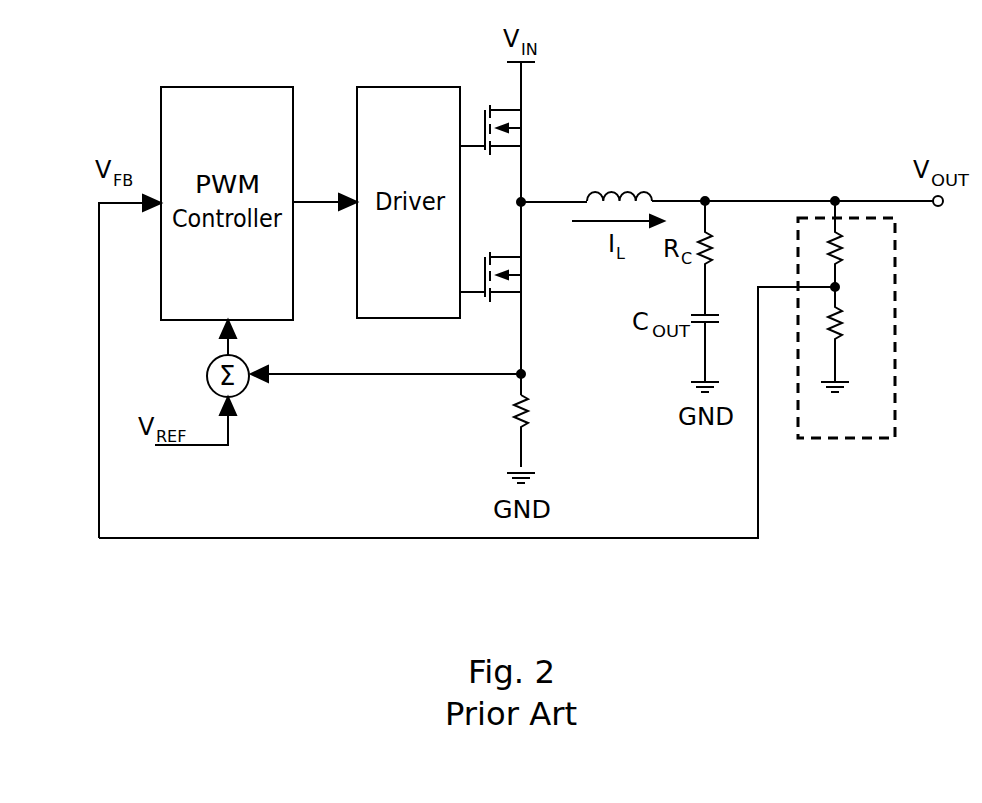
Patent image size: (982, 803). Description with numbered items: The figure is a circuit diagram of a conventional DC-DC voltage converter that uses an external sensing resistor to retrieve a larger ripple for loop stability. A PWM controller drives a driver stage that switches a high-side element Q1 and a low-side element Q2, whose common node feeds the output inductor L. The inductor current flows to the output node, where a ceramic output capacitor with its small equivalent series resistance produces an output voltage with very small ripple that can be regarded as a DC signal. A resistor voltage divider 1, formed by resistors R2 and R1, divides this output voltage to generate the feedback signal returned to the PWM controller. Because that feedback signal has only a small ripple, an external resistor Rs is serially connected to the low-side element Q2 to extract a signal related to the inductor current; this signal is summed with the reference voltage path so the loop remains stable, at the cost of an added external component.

The resistor voltage divider 1 is at (846, 357).
The high-side element Q1 is at (490, 113).
The low-side element Q2 is at (490, 258).
The output inductor L is at (619, 181).
The external resistor Rs is at (535, 439).
The divider resistor R1 is at (856, 334).
The divider resistor R2 is at (856, 243).